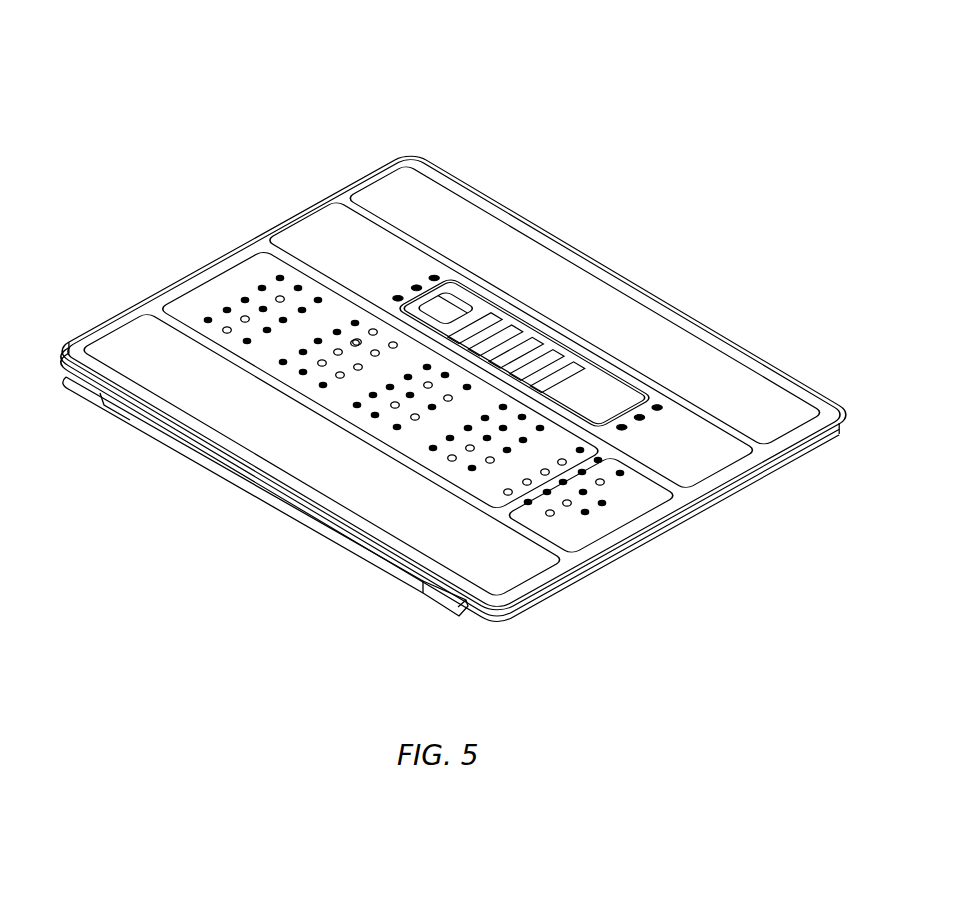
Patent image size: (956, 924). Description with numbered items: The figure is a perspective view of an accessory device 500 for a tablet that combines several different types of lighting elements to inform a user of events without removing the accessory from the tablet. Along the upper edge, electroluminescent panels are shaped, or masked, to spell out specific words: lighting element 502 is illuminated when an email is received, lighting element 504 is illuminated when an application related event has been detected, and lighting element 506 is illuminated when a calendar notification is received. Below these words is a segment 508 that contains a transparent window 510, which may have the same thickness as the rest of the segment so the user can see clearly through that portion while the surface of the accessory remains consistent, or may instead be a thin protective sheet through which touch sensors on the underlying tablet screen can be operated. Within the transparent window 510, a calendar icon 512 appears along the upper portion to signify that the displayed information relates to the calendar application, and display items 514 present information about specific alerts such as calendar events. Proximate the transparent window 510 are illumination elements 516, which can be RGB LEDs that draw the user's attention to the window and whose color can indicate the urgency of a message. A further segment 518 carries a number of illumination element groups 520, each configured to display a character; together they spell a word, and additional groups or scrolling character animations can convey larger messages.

The accessory device 500 is at (126, 106).
The lighting element 502 is at (440, 172).
The lighting element 504 is at (457, 195).
The lighting element 506 is at (483, 212).
The segment 508 is at (300, 210).
The transparent window 510 is at (622, 370).
The calendar icon 512 is at (472, 295).
The display items 514 is at (513, 313).
The illumination elements 516 is at (423, 272).
The segment 518 is at (210, 267).
The illumination element groups 520 is at (516, 508).